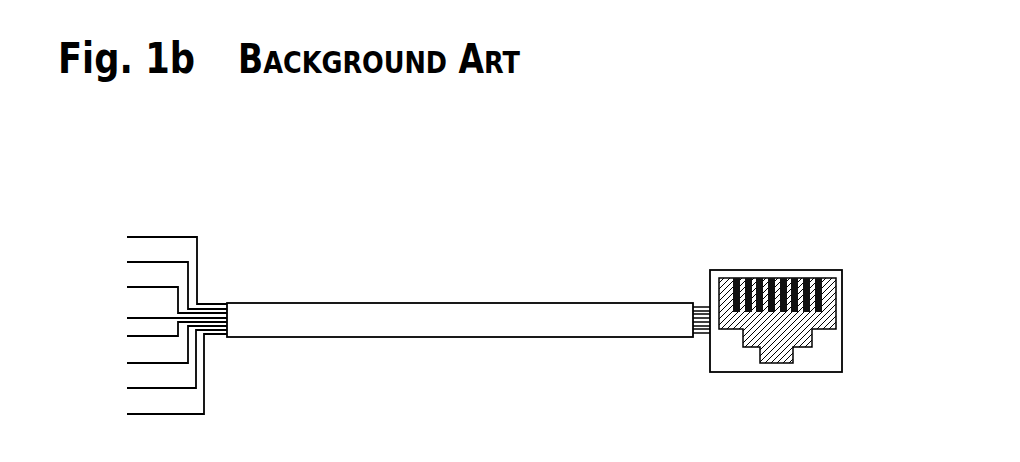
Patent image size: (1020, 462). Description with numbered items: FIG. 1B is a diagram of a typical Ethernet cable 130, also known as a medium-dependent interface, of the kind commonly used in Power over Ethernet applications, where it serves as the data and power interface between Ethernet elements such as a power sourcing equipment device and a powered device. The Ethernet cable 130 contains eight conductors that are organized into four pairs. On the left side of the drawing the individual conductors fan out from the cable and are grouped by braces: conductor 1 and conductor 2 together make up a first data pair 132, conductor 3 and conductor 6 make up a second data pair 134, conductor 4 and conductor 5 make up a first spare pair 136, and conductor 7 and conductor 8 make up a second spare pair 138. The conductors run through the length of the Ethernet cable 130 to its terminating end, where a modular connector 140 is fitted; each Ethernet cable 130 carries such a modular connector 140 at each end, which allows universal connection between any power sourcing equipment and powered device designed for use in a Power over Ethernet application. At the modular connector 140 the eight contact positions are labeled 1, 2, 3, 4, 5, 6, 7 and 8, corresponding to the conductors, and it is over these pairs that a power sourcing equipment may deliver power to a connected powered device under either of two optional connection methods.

The Ethernet cable 130 is at (421, 303).
The first data pair 132 is at (119, 236).
The second data pair 134 is at (119, 288).
The first spare pair 136 is at (119, 336).
The second spare pair 138 is at (119, 387).
The modular connector 140 is at (777, 373).
The conductor 1 is at (735, 267).
The conductor 2 is at (747, 267).
The conductor 3 is at (762, 267).
The conductor 4 is at (771, 267).
The conductor 5 is at (803, 230).
The conductor 6 is at (830, 230).
The conductor 7 is at (862, 230).
The conductor 8 is at (893, 230).